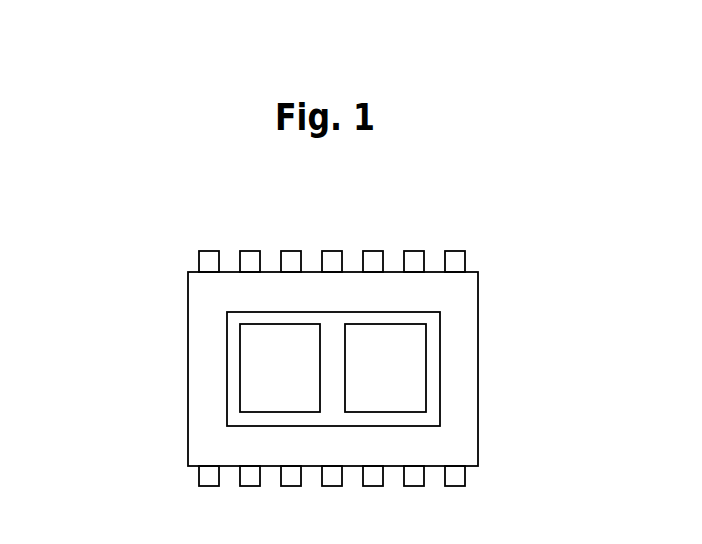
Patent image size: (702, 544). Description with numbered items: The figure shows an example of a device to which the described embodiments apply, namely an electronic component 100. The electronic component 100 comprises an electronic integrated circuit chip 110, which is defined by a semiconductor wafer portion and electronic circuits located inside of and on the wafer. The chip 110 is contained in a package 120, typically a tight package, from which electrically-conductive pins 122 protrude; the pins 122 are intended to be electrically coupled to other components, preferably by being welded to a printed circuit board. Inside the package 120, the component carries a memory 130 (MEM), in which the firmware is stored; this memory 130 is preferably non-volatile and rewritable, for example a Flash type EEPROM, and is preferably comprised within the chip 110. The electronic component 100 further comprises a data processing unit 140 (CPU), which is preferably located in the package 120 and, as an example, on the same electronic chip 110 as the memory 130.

The electronic component 100 is at (145, 278).
The electronic integrated circuit chip 110 is at (203, 373).
The package 120 is at (188, 353).
The pins 122 is at (287, 258).
The memory 130 is at (240, 398).
The data processing unit 140 is at (426, 367).